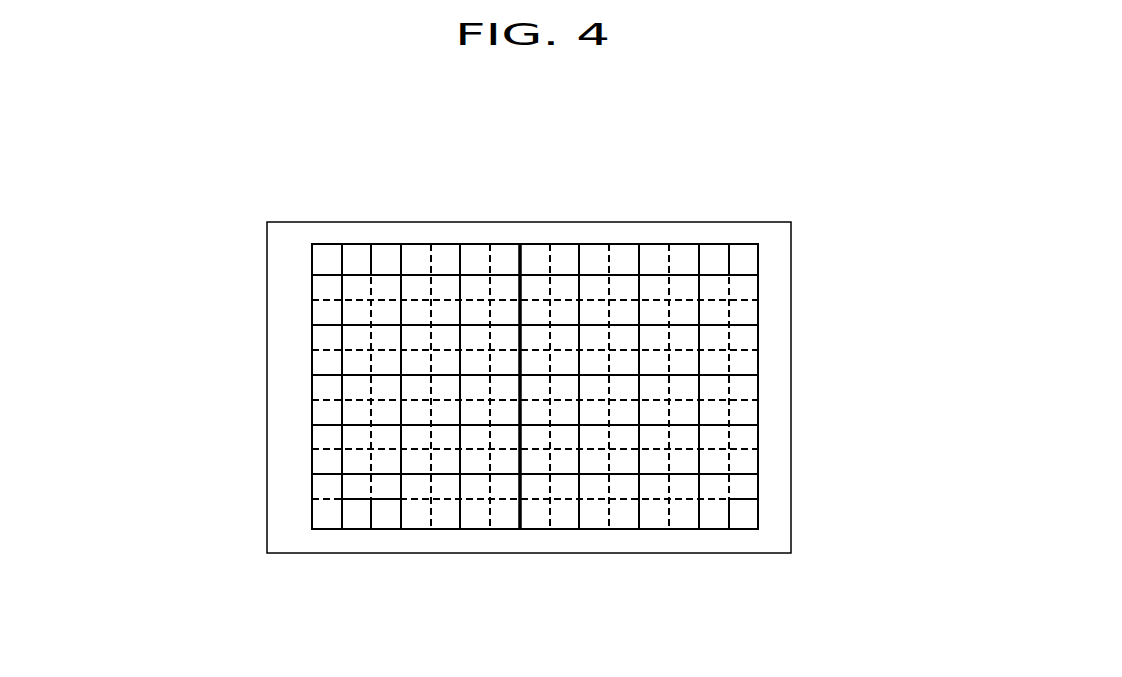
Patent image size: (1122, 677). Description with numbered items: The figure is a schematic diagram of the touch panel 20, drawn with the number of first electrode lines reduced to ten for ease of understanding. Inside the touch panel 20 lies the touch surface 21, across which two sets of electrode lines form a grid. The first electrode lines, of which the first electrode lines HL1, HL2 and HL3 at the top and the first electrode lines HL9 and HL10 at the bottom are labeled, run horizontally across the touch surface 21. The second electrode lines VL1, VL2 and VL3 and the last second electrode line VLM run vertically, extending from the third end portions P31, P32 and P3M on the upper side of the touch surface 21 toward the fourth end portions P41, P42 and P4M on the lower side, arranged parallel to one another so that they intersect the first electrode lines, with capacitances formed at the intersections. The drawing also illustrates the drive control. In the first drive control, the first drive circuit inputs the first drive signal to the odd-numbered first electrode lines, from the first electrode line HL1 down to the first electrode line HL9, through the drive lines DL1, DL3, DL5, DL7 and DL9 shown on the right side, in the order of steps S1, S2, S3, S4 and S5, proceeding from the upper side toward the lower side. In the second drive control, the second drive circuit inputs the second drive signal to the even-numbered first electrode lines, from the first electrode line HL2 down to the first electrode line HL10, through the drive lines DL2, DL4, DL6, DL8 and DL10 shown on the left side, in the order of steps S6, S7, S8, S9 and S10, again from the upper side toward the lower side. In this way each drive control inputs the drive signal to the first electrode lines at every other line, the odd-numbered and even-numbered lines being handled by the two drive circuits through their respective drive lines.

The touch panel 20 is at (776, 160).
The touch surface 21 is at (752, 233).
The second electrode line VL1 is at (341, 513).
The second electrode line VL2 is at (370, 512).
The second electrode line VL3 is at (400, 488).
The second electrode line VLM is at (731, 511).
The first electrode line HL1 is at (392, 274).
The first electrode line HL2 is at (445, 296).
The first electrode line HL3 is at (507, 323).
The first electrode line HL9 is at (634, 465).
The first electrode line HL10 is at (678, 500).
The third end portion P31 is at (341, 243).
The third end portion P32 is at (369, 243).
The third end portion P3M is at (727, 243).
The fourth end portion P41 is at (344, 520).
The fourth end portion P42 is at (367, 513).
The fourth end portion P4M is at (731, 509).
The drive line DL1 is at (593, 219).
The drive line DL2 is at (473, 237).
The drive line DL3 is at (593, 255).
The drive line DL4 is at (296, 350).
The drive line DL5 is at (758, 375).
The drive line DL6 is at (296, 400).
The drive line DL7 is at (758, 425).
The drive line DL8 is at (296, 449).
The drive line DL9 is at (593, 533).
The drive line DL10 is at (473, 558).
The step S1 is at (902, 271).
The step S2 is at (902, 322).
The step S3 is at (902, 372).
The step S4 is at (902, 422).
The step S5 is at (902, 470).
The step S6 is at (163, 295).
The step S7 is at (163, 343).
The step S8 is at (163, 395).
The step S9 is at (163, 443).
The step S10 is at (163, 493).